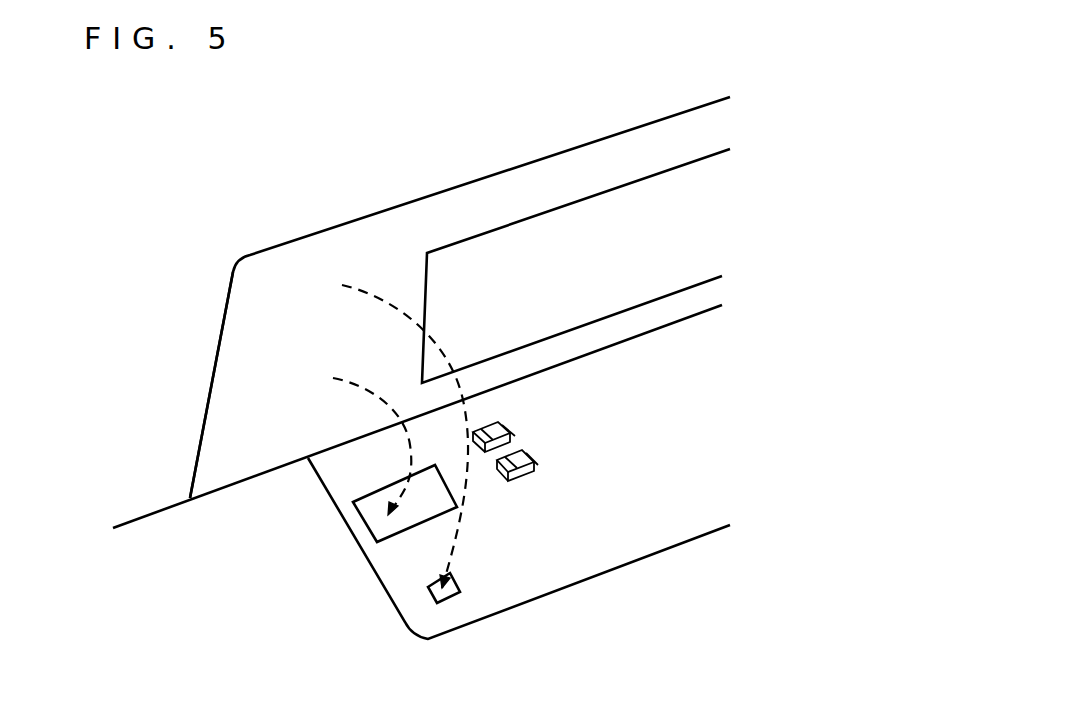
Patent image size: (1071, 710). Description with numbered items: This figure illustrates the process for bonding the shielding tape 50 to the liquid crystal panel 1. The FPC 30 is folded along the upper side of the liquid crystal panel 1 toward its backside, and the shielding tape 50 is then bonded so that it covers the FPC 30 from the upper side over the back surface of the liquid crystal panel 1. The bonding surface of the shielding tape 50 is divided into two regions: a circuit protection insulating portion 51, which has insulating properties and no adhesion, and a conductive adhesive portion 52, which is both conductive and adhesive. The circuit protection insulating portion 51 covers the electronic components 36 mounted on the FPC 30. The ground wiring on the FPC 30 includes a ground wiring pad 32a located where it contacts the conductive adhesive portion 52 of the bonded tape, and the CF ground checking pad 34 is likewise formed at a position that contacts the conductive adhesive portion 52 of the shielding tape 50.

The liquid crystal panel 1 is at (157, 535).
The FPC 30 is at (497, 613).
The ground wiring pad 32a is at (362, 521).
The CF ground checking pad 34 is at (428, 588).
The electronic components 36 is at (507, 425).
The shielding tape 50 is at (276, 243).
The circuit protection insulating portion 51 is at (527, 220).
The conductive adhesive portion 52 is at (233, 378).